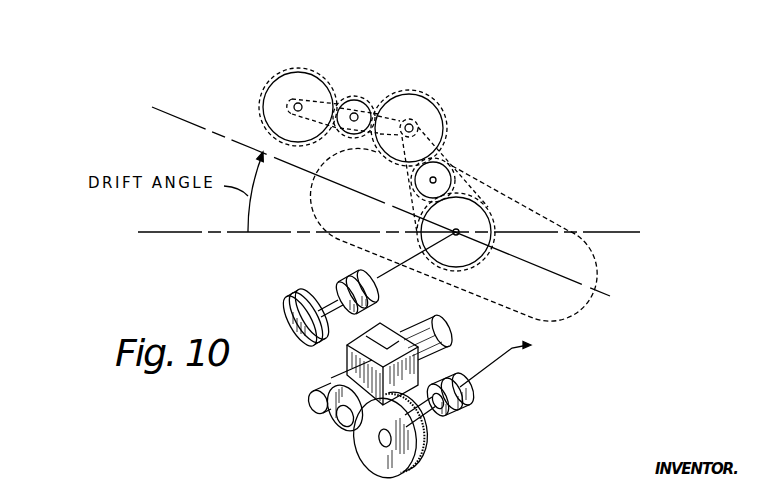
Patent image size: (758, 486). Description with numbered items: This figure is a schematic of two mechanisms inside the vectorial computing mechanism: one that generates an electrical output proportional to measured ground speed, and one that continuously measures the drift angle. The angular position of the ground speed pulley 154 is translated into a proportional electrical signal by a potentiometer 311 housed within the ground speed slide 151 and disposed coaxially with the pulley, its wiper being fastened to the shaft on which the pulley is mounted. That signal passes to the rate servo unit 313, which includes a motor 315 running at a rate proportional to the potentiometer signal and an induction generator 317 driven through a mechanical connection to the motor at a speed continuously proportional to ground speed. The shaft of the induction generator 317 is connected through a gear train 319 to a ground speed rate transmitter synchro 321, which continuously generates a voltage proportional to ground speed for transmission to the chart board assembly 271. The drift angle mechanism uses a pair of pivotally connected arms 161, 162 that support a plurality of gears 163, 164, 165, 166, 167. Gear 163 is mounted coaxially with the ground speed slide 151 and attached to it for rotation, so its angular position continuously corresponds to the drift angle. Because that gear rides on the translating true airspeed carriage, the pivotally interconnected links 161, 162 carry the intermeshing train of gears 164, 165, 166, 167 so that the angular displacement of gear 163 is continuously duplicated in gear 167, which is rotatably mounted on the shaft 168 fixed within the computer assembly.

The ground speed slide 151 is at (537, 220).
The pivotally connected arm 161 is at (463, 180).
The pivotally connected arm 162 is at (390, 117).
The gear 163 is at (490, 213).
The gear 164 is at (450, 164).
The gear 165 is at (423, 103).
The gear 166 is at (362, 100).
The gear 167 is at (310, 78).
The shaft 168 is at (293, 105).
The ground speed pulley 154 is at (295, 302).
The potentiometer 311 is at (358, 272).
The rate servo unit 313 is at (398, 326).
The motor 315 is at (437, 330).
The induction generator 317 is at (367, 373).
The gear train 319 is at (335, 432).
The ground speed rate transmitter synchro 321 is at (470, 412).
The chart board 271 is at (564, 363).